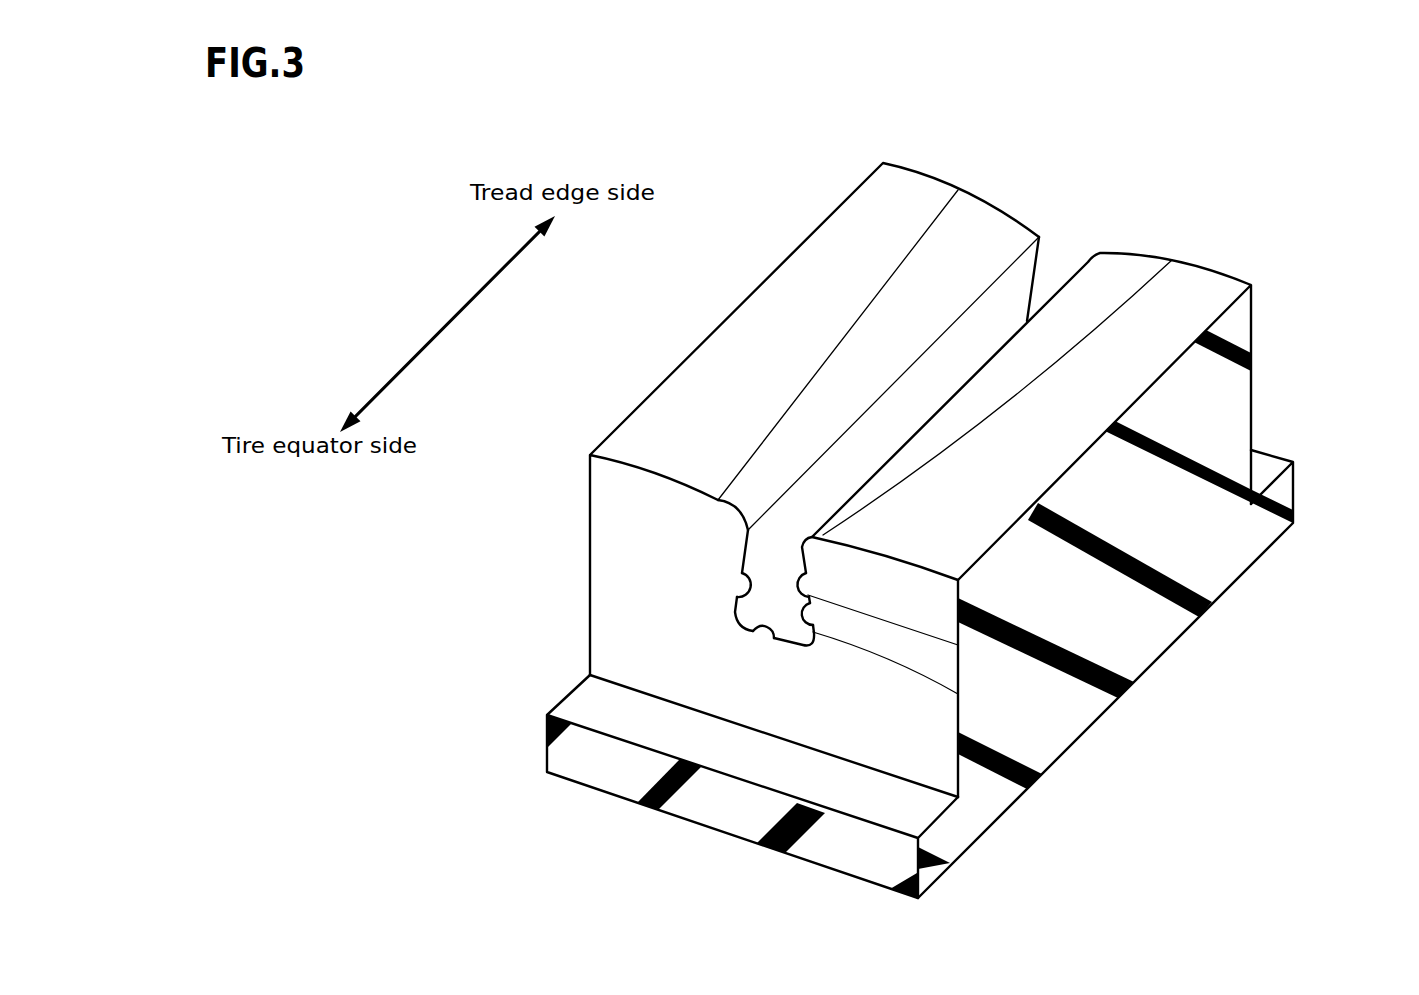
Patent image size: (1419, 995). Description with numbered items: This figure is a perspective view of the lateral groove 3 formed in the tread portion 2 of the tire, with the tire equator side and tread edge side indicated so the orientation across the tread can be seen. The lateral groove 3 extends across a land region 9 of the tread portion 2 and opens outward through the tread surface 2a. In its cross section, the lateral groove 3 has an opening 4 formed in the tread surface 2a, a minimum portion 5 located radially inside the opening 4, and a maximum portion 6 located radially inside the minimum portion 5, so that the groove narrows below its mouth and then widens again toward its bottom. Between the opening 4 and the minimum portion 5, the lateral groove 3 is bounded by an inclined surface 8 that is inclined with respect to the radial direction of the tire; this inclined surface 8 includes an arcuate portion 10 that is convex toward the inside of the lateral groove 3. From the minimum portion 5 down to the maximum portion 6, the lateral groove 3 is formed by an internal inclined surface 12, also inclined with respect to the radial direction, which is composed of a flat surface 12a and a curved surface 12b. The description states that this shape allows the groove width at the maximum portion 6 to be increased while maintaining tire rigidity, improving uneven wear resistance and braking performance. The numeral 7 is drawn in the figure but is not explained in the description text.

The tread portion 2 is at (1161, 158).
The tread surface 2a is at (848, 250).
The lateral groove 3 is at (1076, 216).
The opening 4 is at (1044, 210).
The minimum portion 5 is at (765, 551).
The maximum portion 6 is at (831, 662).
The groove bottom 7 is at (803, 555).
The inclined surface 8 is at (960, 410).
The land region 9 is at (710, 397).
The arcuate portion 10 is at (940, 265).
The internal inclined surface 12 is at (741, 610).
The flat surface 12a is at (958, 645).
The curved surface 12b is at (958, 694).